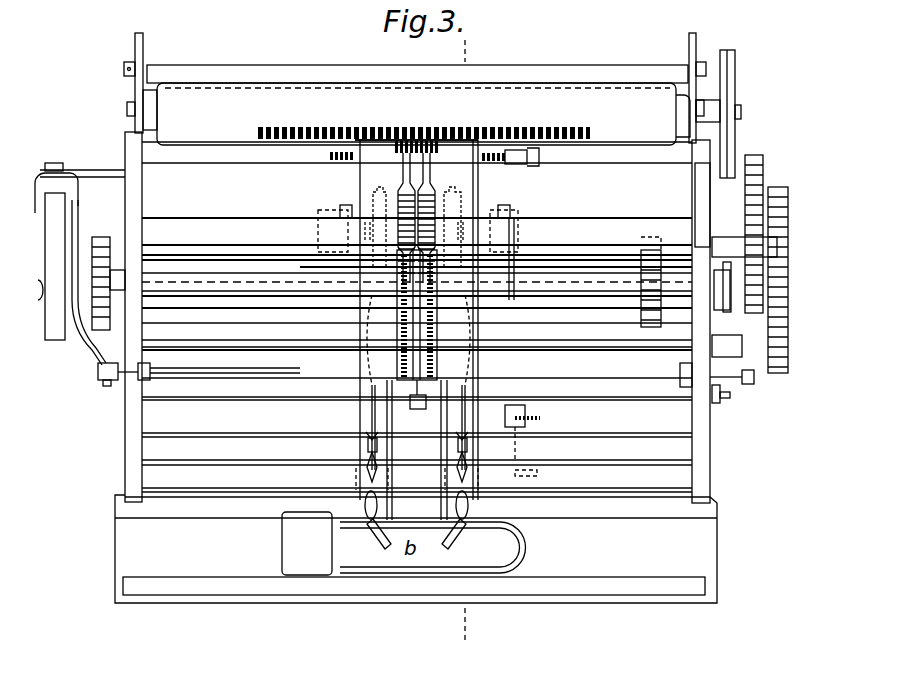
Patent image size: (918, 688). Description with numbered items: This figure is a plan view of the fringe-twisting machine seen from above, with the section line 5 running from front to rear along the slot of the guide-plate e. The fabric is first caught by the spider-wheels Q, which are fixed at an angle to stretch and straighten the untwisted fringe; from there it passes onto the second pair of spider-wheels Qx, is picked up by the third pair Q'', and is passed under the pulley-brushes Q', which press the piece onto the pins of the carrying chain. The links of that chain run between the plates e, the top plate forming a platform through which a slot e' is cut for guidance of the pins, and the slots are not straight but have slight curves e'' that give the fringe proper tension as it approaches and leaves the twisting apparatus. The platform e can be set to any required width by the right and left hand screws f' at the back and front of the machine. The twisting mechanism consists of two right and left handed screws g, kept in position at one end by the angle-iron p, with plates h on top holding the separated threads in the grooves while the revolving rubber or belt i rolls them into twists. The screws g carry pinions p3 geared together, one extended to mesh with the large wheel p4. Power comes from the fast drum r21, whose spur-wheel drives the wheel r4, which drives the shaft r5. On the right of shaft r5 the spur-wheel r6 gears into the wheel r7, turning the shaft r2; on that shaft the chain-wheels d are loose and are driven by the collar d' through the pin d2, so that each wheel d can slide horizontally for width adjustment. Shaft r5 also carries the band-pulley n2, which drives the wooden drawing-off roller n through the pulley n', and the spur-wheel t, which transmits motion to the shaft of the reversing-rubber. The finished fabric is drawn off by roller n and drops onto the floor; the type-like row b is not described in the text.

The roller n is at (416, 105).
The pulley n' is at (731, 105).
The band-pulley n2 is at (735, 318).
The type bar row b is at (424, 114).
The pinions p3 is at (347, 160).
The large wheel p4 is at (462, 140).
The right and left hand screws f' is at (443, 286).
The shaft r5 is at (216, 285).
The plates h is at (416, 320).
The chain-wheels d is at (420, 220).
The collar d' is at (417, 252).
The pin d2 is at (418, 231).
The screws g is at (400, 258).
The curves e'' is at (429, 340).
The slot e' is at (419, 408).
The plates e is at (419, 388).
The revolving rubber or belt i is at (415, 315).
The pulley-brushes Q' is at (417, 446).
The third pair of spider-wheels Q'' is at (417, 471).
The second pair of spider-wheels Qx is at (477, 505).
The spider-wheels Q is at (413, 559).
The wheel r4 is at (108, 266).
The angle-iron p is at (43, 275).
The fast drum r21 is at (76, 342).
The shaft r2 is at (735, 205).
The wheel r7 is at (760, 213).
The spur-wheel r6 is at (752, 305).
The spur-wheel t is at (650, 295).
The section line 5 is at (473, 342).